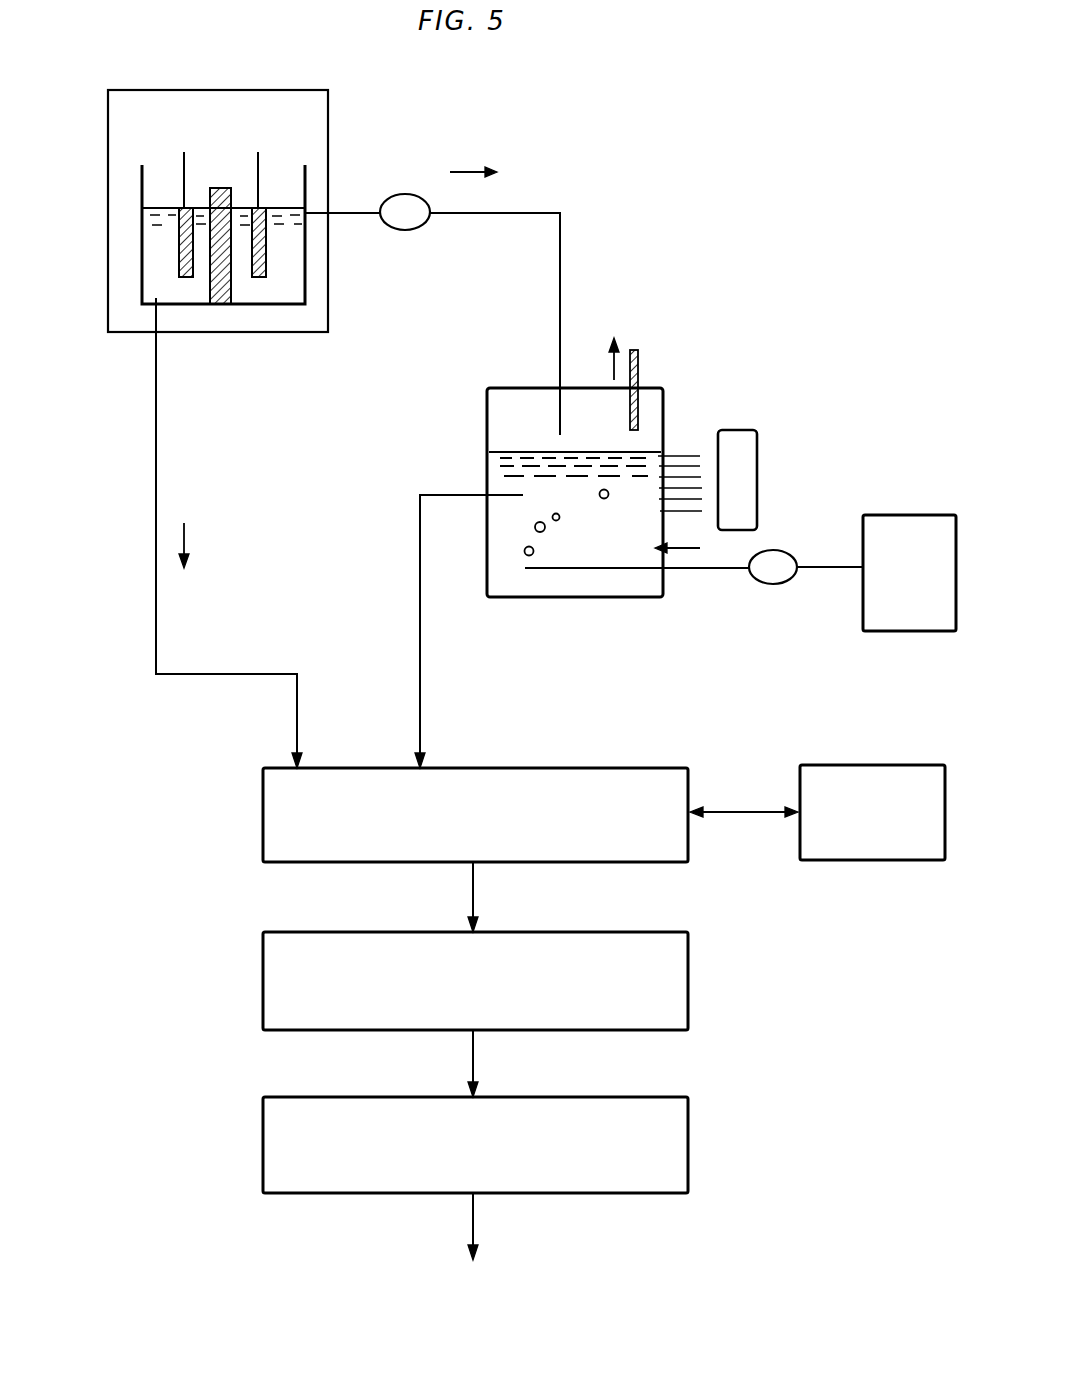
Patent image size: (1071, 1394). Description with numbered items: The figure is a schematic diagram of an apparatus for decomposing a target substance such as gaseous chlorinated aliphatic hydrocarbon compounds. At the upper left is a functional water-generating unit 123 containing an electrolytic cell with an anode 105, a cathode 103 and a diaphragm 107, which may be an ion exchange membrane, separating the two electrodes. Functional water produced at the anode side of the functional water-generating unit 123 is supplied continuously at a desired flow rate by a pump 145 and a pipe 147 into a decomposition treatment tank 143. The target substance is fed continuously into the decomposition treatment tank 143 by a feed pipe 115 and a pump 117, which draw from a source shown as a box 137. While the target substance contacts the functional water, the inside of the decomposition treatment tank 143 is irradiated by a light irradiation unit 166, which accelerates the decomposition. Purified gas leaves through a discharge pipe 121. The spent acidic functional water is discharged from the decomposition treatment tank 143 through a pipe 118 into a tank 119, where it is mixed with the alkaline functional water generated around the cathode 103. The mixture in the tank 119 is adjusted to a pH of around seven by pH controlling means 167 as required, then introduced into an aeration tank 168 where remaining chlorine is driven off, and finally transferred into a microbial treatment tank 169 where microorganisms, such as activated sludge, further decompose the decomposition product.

The cathode 103 is at (179, 262).
The anode 105 is at (266, 262).
The diaphragm 107 is at (228, 305).
The functional water-generating unit 123 is at (328, 158).
The pump 145 is at (405, 194).
The pipe 147 is at (510, 212).
The decomposition treatment tank 143 is at (590, 597).
The discharge pipe 121 is at (640, 370).
The light irradiation unit 166 is at (757, 452).
The feed pipe 115 is at (685, 570).
The pump 117 is at (773, 550).
The reagent reservoir 137 is at (909, 573).
The pipe 118 is at (421, 700).
The tank 119 is at (475, 815).
The pH controlling means 167 is at (817, 812).
The aeration tank 168 is at (475, 981).
The microbial treatment tank 169 is at (475, 1145).